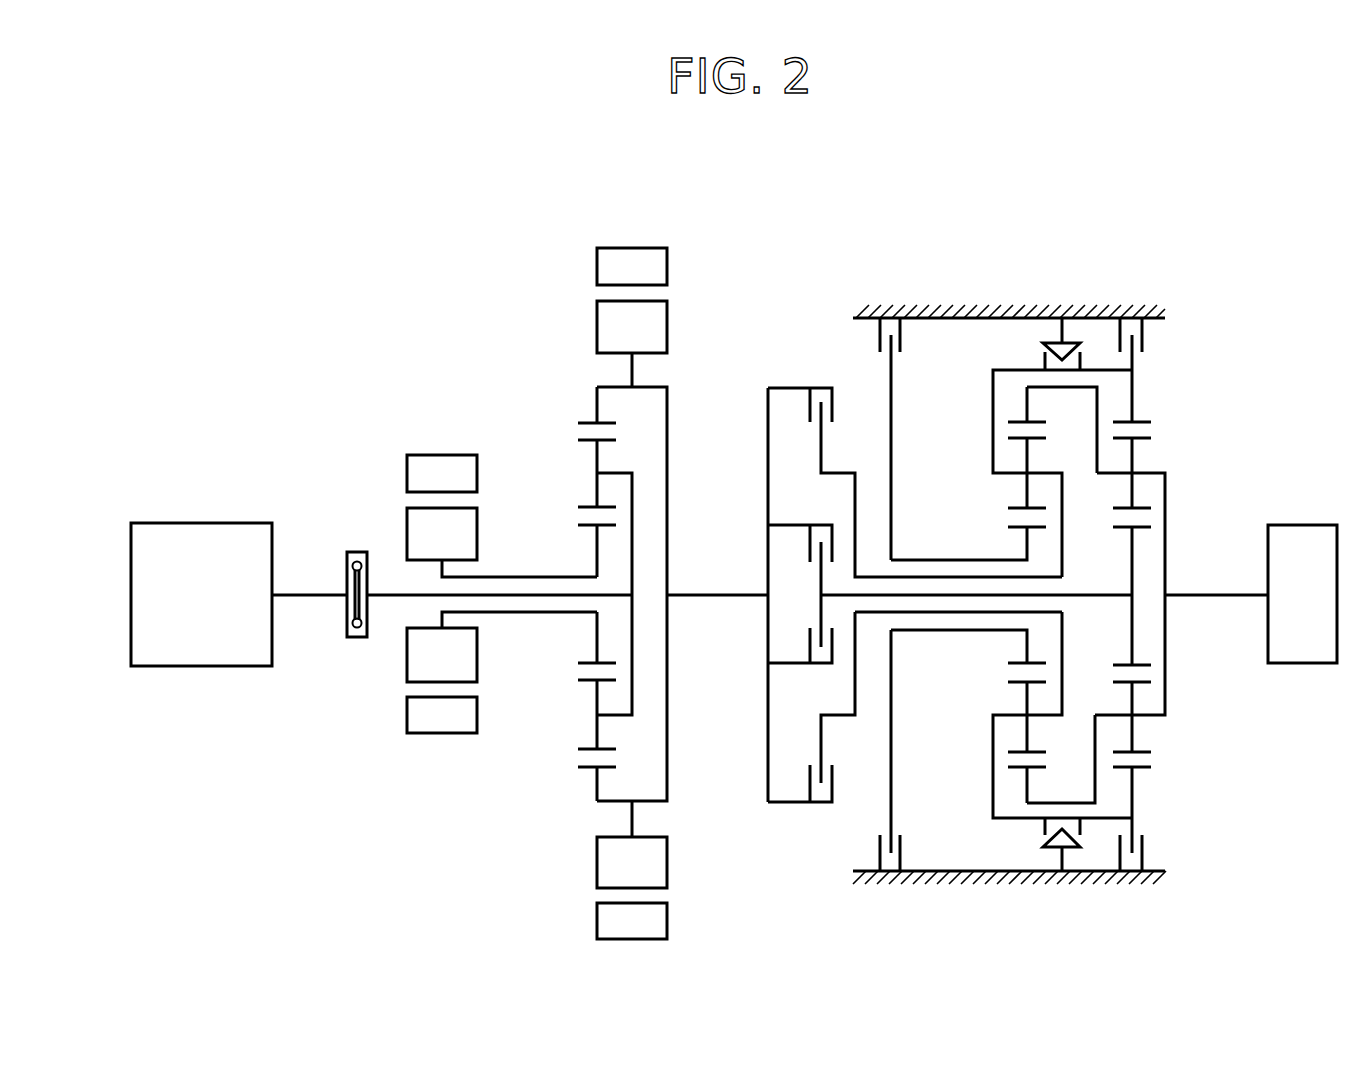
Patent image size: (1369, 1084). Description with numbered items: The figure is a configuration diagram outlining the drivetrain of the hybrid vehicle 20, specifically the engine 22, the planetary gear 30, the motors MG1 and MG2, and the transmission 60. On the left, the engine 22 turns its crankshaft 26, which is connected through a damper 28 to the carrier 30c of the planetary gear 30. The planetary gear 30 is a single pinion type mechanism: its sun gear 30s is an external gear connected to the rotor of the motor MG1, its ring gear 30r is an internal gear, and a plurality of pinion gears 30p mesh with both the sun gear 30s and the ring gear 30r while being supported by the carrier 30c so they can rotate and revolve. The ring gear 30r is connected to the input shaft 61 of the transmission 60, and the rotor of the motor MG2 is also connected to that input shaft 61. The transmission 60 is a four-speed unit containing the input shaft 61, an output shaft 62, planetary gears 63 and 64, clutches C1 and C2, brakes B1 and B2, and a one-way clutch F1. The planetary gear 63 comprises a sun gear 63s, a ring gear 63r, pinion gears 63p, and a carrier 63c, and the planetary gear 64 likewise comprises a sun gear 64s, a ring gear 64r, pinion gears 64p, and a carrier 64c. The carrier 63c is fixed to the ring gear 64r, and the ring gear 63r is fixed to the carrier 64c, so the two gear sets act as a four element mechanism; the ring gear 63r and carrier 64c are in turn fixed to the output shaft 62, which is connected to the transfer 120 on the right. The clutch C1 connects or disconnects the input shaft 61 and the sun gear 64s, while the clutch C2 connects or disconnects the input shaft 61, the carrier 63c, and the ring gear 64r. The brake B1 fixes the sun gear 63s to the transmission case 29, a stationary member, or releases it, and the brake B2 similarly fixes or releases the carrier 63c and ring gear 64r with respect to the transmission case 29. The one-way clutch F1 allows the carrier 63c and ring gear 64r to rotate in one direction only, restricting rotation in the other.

The hybrid vehicle 20 is at (1113, 197).
The engine 22 is at (202, 522).
The crankshaft 26 is at (305, 588).
The damper 28 is at (357, 550).
The transmission case 29 is at (943, 305).
The planetary gear 30 is at (586, 594).
The ring gear 30r is at (597, 418).
The pinion gears 30p is at (597, 458).
The carrier 30c is at (632, 492).
The sun gear 30s is at (597, 546).
The transmission 60 is at (1165, 268).
The input shaft 61 is at (717, 588).
The output shaft 62 is at (1208, 600).
The planetary gear 63 is at (1011, 594).
The ring gear 63r is at (1027, 418).
The pinion gears 63p is at (1027, 460).
The carrier 63c is at (1010, 473).
The sun gear 63s is at (1027, 548).
The planetary gear 64 is at (1167, 594).
The ring gear 64r is at (1132, 420).
The pinion gears 64p is at (1132, 460).
The carrier 64c is at (1150, 473).
The sun gear 64s is at (1142, 548).
The transfer 120 is at (1303, 522).
The motor MG1 is at (443, 437).
The motor MG2 is at (632, 230).
The clutch C1 is at (808, 538).
The clutch C2 is at (808, 398).
The brake B1 is at (880, 335).
The brake B2 is at (1120, 335).
The one-way clutch F1 is at (1048, 355).